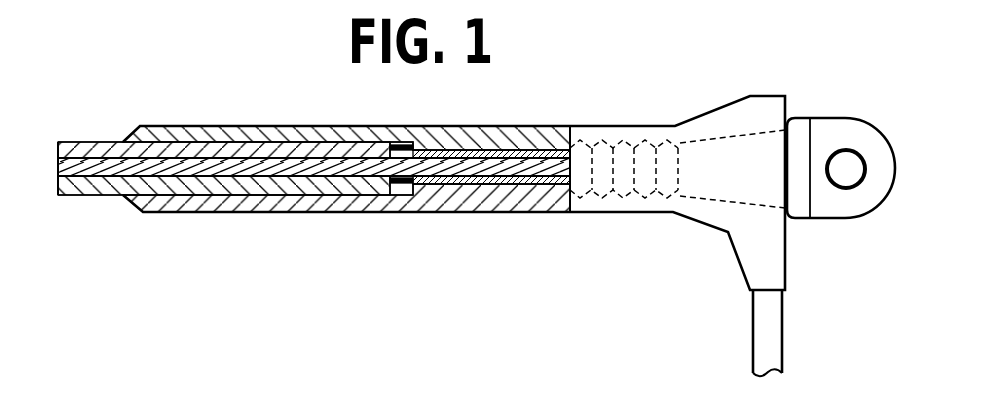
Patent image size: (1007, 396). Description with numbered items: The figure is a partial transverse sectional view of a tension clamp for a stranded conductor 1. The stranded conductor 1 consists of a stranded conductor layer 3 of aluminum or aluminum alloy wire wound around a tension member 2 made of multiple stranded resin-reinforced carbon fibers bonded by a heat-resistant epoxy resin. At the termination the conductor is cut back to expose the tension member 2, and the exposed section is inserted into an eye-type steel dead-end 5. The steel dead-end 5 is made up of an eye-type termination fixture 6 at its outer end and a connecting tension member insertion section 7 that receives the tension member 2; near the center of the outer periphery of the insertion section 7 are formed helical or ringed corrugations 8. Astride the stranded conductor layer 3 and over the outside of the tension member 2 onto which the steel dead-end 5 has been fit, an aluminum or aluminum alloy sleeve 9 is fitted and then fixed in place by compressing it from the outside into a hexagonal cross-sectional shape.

The stranded conductor 1 is at (96, 200).
The tension member 2 is at (368, 170).
The stranded conductor layer 3 is at (95, 152).
The eye-type steel dead-end 5 is at (792, 118).
The eye-type termination fixture 6 is at (837, 210).
The tension member insertion section 7 is at (517, 183).
The corrugations 8 is at (616, 193).
The sleeve 9 is at (448, 200).